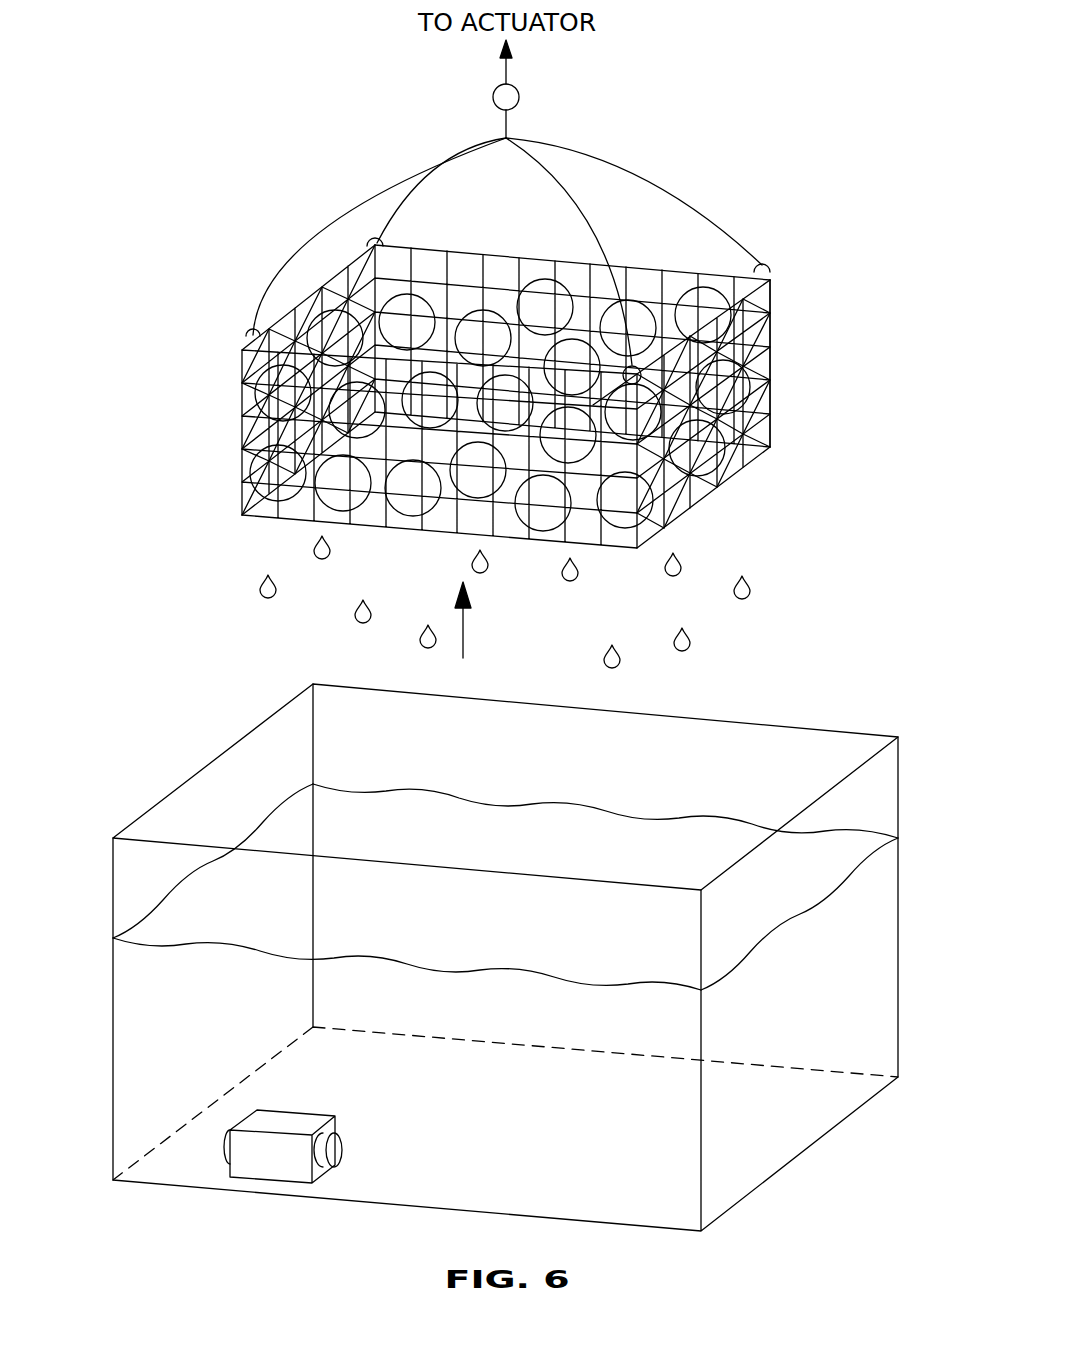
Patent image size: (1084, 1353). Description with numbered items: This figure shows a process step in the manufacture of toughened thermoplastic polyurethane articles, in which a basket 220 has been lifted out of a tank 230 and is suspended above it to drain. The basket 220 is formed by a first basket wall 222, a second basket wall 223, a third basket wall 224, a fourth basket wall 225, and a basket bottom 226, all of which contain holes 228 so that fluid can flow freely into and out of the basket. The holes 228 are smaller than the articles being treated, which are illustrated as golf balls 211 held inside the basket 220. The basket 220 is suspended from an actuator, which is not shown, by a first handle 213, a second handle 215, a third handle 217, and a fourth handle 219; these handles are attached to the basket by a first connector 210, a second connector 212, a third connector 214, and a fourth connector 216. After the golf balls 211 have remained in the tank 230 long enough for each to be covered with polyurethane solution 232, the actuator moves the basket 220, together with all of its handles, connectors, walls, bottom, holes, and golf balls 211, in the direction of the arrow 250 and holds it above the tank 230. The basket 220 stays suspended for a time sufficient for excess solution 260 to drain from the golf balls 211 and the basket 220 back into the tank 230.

The first connector 210 is at (767, 272).
The golf balls 211 is at (538, 293).
The second connector 212 is at (373, 236).
The first handle 213 is at (655, 182).
The third connector 214 is at (247, 330).
The second handle 215 is at (418, 178).
The fourth connector 216 is at (772, 393).
The third handle 217 is at (310, 245).
The fourth handle 219 is at (562, 180).
The basket 220 is at (759, 183).
The first basket wall 222 is at (630, 282).
The second basket wall 223 is at (732, 477).
The third basket wall 224 is at (447, 527).
The fourth basket wall 225 is at (280, 322).
The basket bottom 226 is at (673, 508).
The holes 228 is at (500, 267).
The tank 230 is at (808, 730).
The polyurethane solution 232 is at (673, 843).
The arrow 250 is at (465, 628).
The excess solution 260 is at (355, 617).